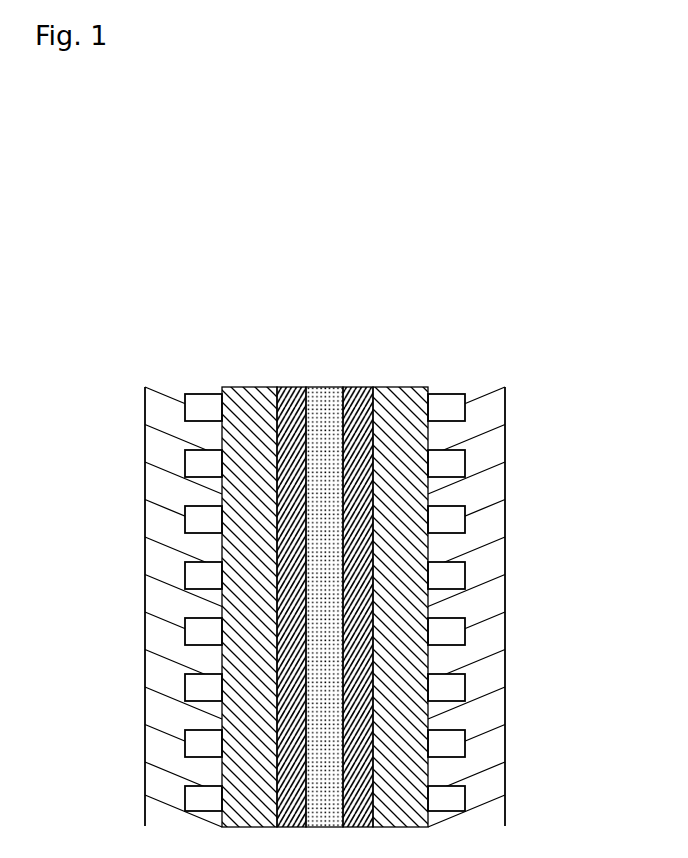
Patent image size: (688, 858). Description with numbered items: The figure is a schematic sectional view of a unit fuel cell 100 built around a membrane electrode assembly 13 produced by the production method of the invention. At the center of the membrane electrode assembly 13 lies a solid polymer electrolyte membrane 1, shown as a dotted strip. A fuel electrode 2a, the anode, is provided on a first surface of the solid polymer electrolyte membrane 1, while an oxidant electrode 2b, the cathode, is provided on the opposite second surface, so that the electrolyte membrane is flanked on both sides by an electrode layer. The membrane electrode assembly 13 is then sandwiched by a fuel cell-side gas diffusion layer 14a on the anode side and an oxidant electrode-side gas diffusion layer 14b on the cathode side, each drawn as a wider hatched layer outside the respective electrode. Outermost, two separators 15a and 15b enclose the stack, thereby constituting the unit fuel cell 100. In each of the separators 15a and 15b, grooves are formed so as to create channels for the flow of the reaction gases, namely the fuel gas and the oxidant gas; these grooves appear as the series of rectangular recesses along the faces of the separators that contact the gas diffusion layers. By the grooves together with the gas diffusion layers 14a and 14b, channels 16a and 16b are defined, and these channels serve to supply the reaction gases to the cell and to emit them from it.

The unit fuel cell 100 is at (440, 192).
The membrane electrode assembly 13 is at (402, 244).
The solid polymer electrolyte membrane 1 is at (319, 387).
The fuel electrode 2a is at (287, 387).
The oxidant electrode 2b is at (357, 387).
The fuel cell-side gas diffusion layer 14a is at (245, 387).
The oxidant electrode-side gas diffusion layer 14b is at (399, 387).
The separator 15a is at (213, 488).
The separator 15b is at (457, 497).
The channel 16a is at (208, 633).
The channel 16b is at (455, 634).